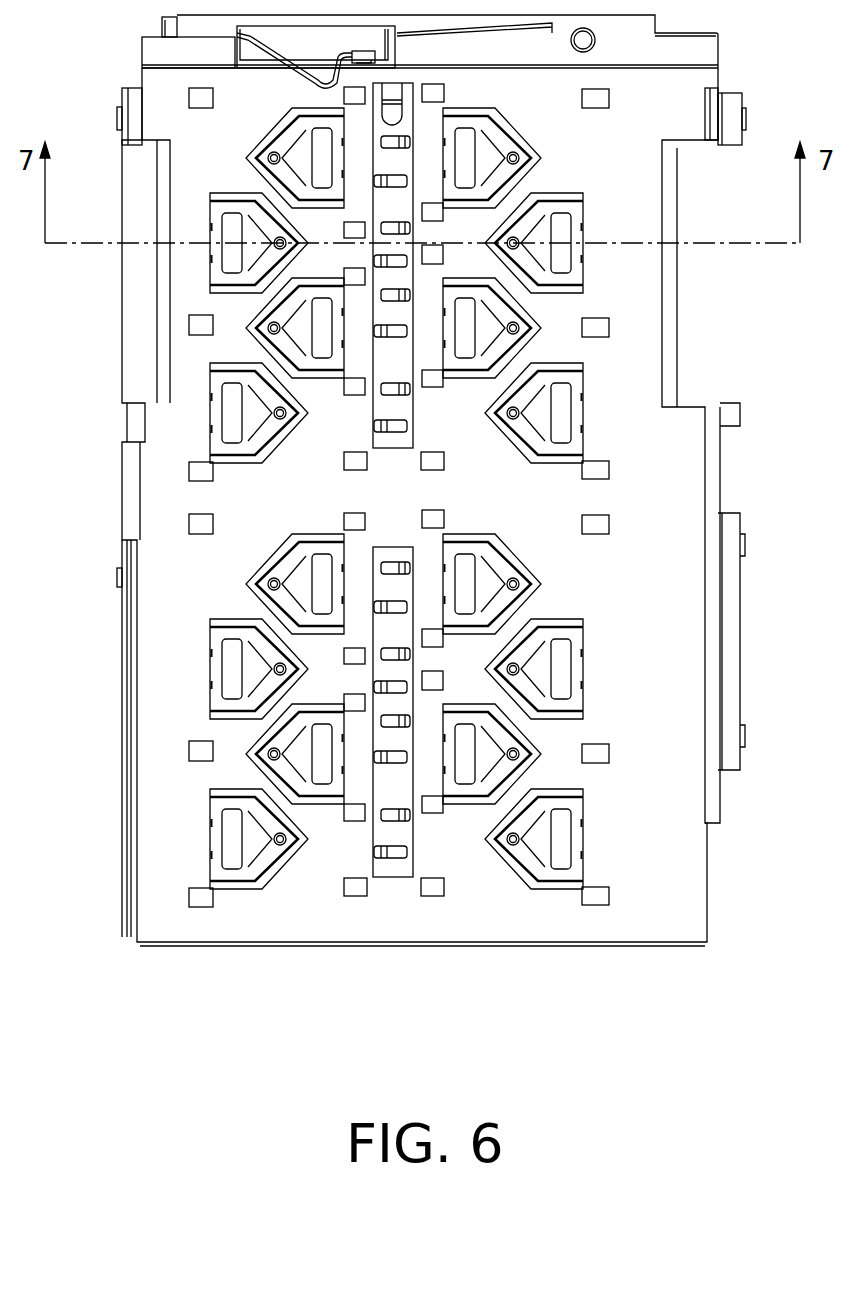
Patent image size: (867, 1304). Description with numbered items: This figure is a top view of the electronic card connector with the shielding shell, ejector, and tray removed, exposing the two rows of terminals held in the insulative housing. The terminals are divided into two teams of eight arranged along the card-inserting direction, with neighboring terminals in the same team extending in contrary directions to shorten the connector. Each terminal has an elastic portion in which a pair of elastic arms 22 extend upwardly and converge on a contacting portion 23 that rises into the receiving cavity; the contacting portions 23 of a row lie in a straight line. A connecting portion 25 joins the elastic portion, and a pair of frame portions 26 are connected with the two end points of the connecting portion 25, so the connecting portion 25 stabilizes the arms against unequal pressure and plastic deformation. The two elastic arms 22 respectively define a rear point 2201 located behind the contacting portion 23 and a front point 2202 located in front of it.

The elastic arms 22 is at (267, 858).
The contacting portion 23 is at (287, 842).
The connecting portion 25 is at (248, 820).
The frame portions 26 is at (233, 871).
The rear point 2201 is at (537, 867).
The front point 2202 is at (540, 803).